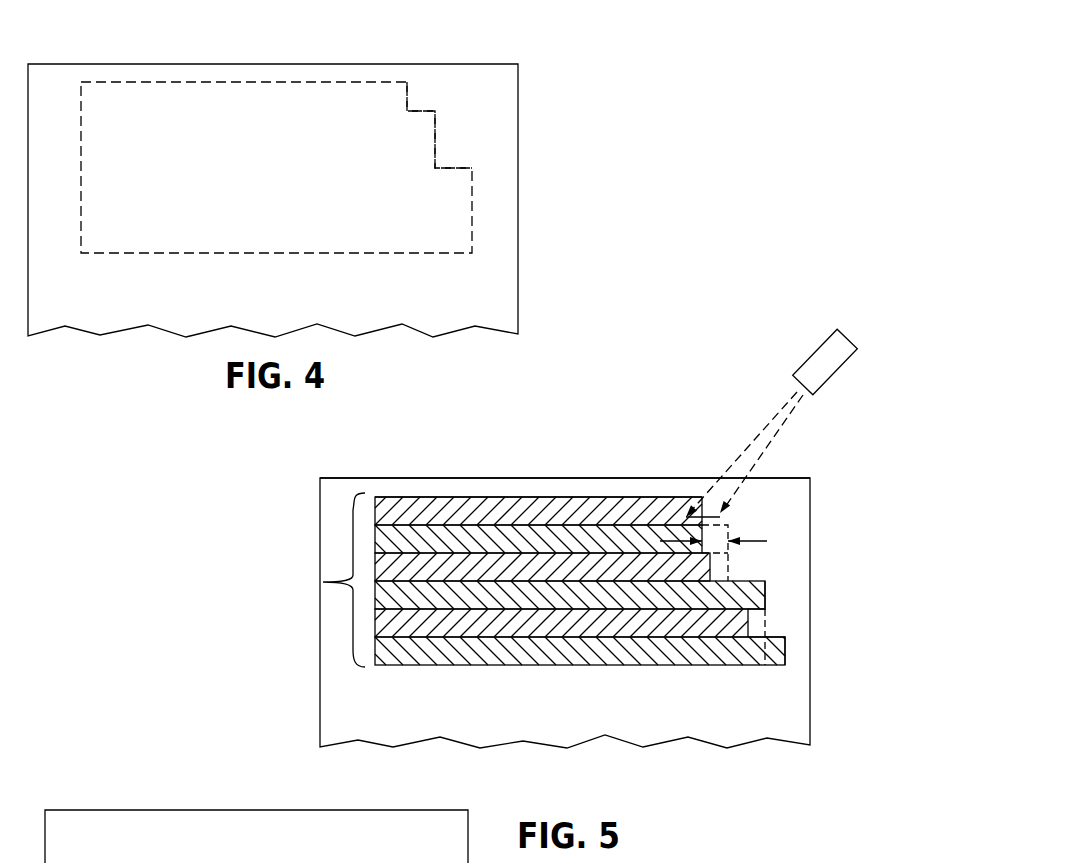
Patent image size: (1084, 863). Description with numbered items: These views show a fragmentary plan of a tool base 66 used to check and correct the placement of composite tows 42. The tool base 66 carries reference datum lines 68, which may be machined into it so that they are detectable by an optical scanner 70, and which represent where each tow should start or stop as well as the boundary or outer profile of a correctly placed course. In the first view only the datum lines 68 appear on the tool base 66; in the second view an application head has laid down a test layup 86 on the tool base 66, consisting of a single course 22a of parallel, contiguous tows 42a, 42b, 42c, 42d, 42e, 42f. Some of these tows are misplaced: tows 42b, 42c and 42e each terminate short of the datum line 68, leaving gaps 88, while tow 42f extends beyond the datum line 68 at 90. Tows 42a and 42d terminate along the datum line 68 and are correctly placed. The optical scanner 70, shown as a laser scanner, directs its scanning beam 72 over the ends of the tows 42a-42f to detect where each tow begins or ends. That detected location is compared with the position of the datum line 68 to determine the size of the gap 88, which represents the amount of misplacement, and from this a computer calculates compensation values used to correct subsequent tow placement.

In FIG. 5, the course 22a is at (323, 582).
In FIG. 5, the tows 42 is at (256, 836).
In FIG. 5, the tow 42a is at (582, 508).
In FIG. 5, the tow 42b is at (612, 540).
In FIG. 5, the tow 42c is at (648, 560).
In FIG. 5, the tow 42d is at (570, 597).
In FIG. 5, the tow 42e is at (620, 625).
In FIG. 5, the tow 42f is at (680, 655).
In FIG. 4, the tool base 66 is at (274, 79).
In FIG. 5, the tool base 66 is at (527, 487).
In FIG. 4, the datum lines 68 is at (438, 131).
In FIG. 5, the datum lines 68 is at (767, 618).
In FIG. 5, the optical scanner 70 is at (815, 350).
In FIG. 5, the scanning beam 72 is at (765, 445).
In FIG. 5, the test layup 86 is at (427, 508).
In FIG. 5, the gap 88 is at (757, 541).
In FIG. 5, the tow extension beyond datum line 90 is at (778, 661).